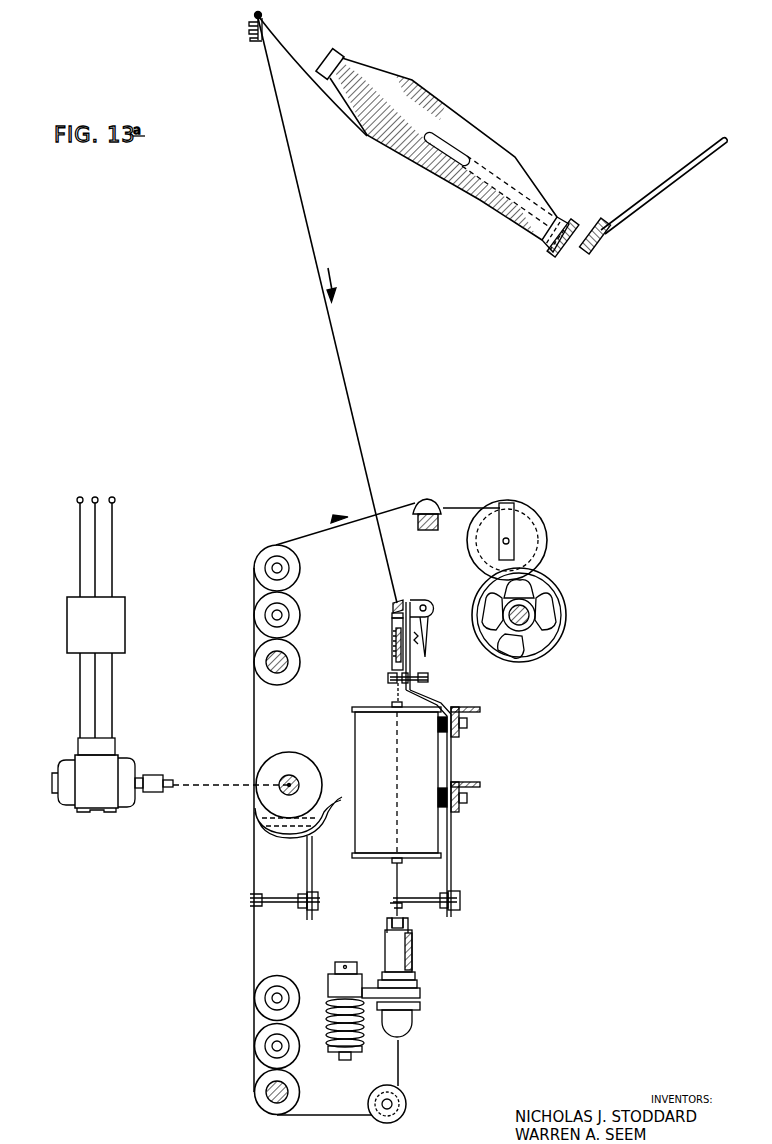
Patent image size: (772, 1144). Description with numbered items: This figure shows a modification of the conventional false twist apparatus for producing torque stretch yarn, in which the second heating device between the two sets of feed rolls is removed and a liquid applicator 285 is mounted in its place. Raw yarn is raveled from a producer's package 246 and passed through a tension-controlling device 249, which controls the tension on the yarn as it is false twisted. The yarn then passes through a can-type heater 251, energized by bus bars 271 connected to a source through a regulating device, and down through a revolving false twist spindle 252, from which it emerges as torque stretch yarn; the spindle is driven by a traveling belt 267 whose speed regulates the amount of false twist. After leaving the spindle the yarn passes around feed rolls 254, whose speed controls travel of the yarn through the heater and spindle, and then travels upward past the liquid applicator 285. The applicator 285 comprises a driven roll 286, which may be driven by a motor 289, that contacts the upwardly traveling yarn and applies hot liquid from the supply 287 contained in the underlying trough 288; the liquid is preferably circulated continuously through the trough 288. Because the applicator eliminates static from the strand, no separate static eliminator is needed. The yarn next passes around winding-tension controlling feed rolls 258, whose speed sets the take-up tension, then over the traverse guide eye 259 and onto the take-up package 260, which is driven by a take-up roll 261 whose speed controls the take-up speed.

The producer's package 246 is at (455, 122).
The tension-controlling device 249 is at (407, 603).
The can-type heater 251 is at (370, 707).
The false twist spindle 252 is at (410, 928).
The feed rolls 254 is at (249, 994).
The winding-tension controlling feed rolls 258 is at (250, 540).
The traverse guide eye 259 is at (428, 508).
The take-up package 260 is at (528, 506).
The take-up roll 261 is at (558, 590).
The traveling belt 267 is at (414, 966).
The bus bars 271 is at (456, 785).
The liquid applicator 285 is at (303, 748).
The driven roll 286 is at (315, 767).
The supply 287 is at (277, 832).
The trough 288 is at (301, 836).
The motor 289 is at (125, 761).